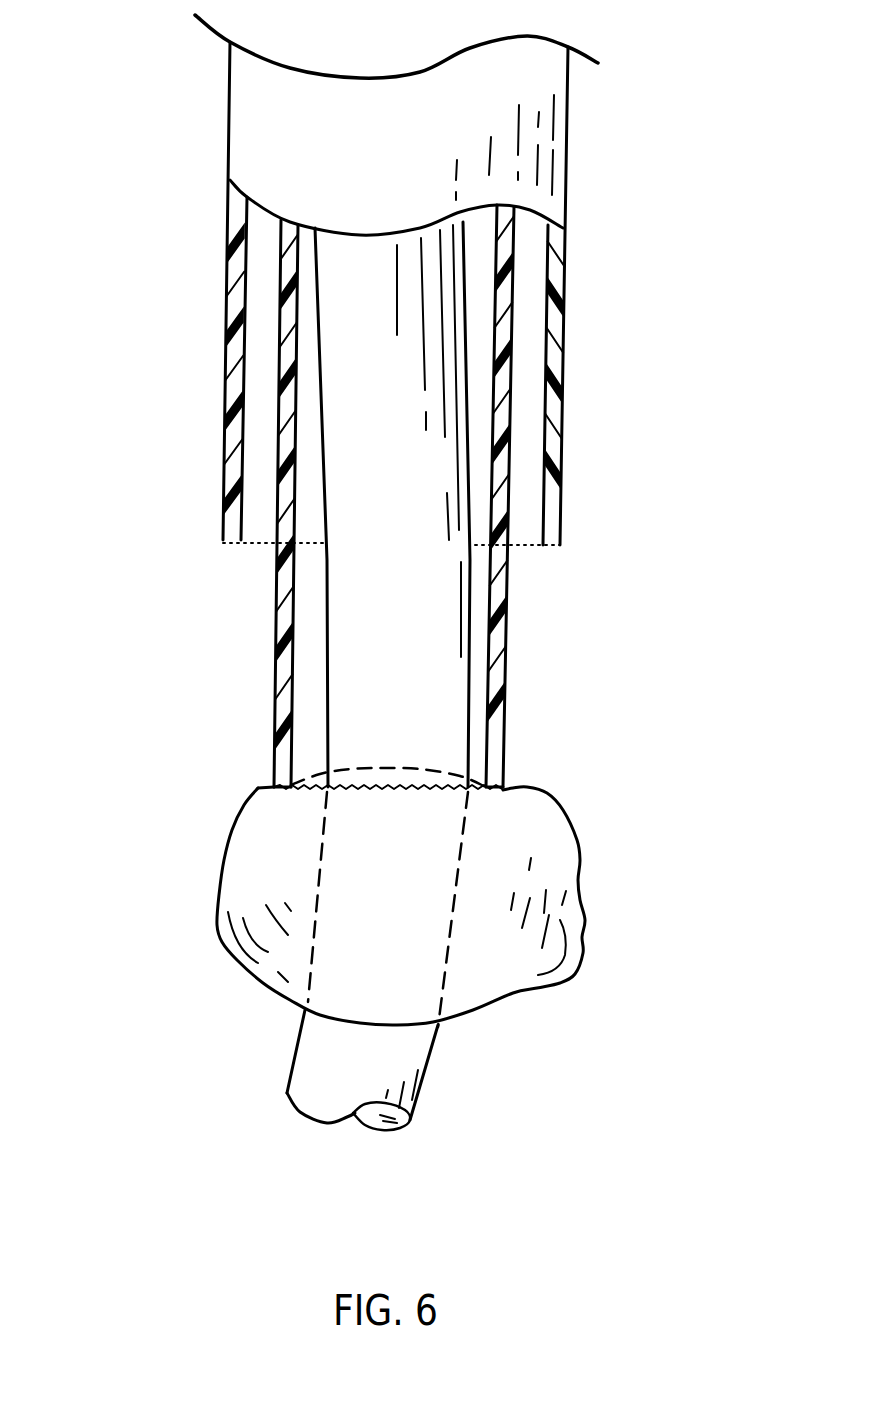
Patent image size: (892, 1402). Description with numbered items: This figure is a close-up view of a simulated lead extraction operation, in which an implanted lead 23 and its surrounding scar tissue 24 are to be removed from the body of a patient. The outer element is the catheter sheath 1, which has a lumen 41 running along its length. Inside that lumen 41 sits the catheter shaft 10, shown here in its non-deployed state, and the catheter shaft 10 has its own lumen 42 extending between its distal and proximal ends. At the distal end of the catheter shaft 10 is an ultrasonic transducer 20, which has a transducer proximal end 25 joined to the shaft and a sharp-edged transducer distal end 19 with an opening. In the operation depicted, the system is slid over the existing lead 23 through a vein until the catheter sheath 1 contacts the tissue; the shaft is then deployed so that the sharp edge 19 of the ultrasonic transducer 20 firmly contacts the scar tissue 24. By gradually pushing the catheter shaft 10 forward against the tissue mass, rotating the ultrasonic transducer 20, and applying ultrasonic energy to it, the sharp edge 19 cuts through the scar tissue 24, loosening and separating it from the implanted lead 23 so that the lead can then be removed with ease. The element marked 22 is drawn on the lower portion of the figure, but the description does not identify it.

The catheter sheath 1 is at (567, 267).
The lumen 41 is at (528, 333).
The lumen 42 is at (480, 397).
The implanted lead 23 is at (470, 483).
The catheter shaft 10 is at (508, 597).
The ultrasonic transducer 20 is at (508, 738).
The transducer proximal end 25 is at (267, 642).
The transducer distal end 19 is at (265, 785).
The distal tubular portion 22 is at (313, 788).
The scar tissue 24 is at (582, 853).